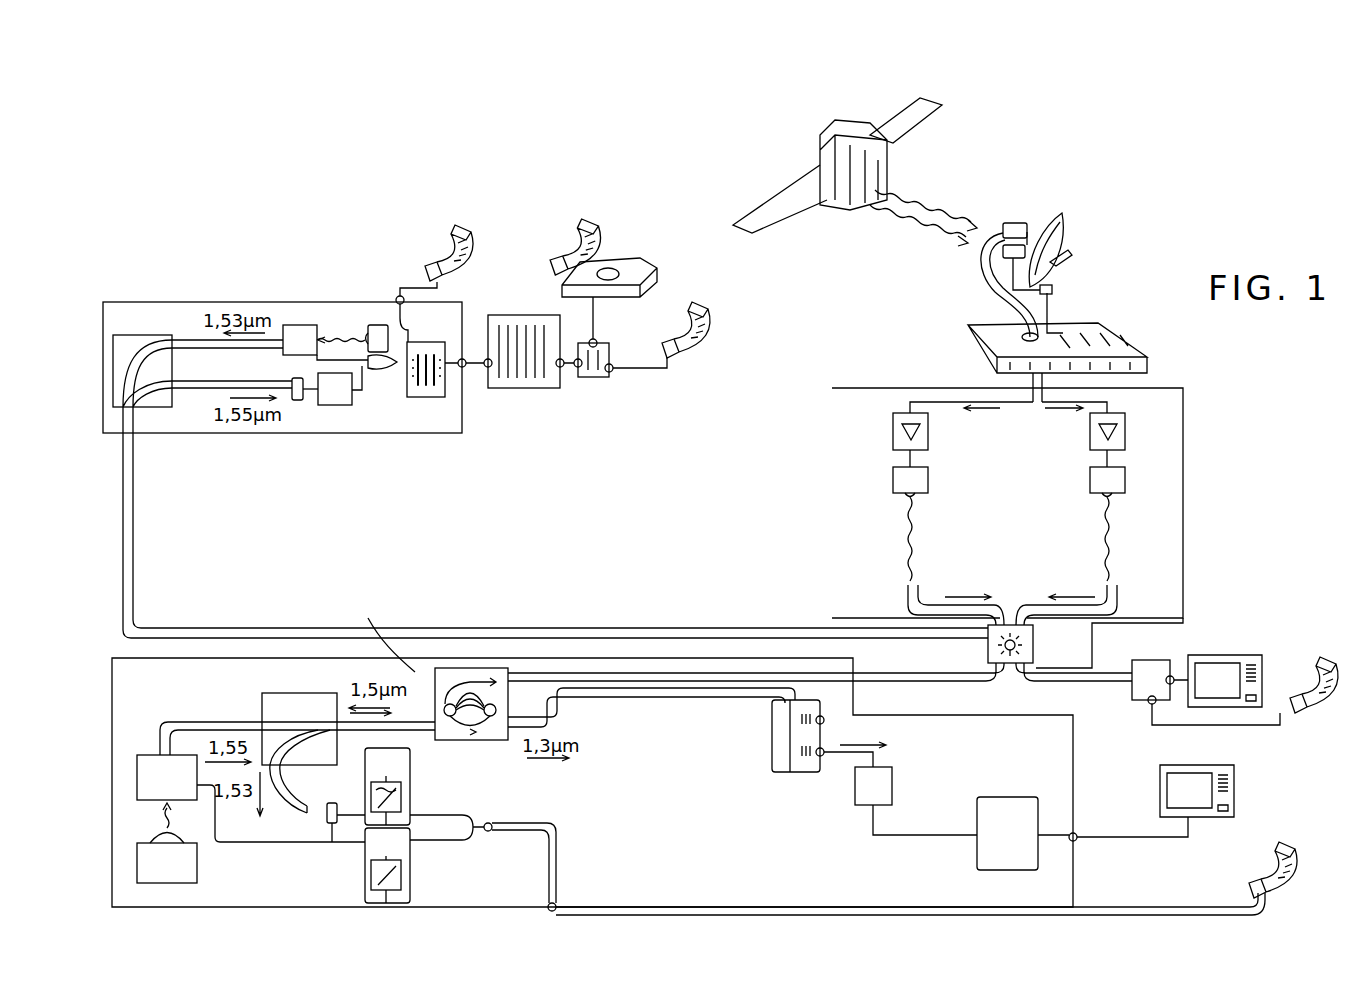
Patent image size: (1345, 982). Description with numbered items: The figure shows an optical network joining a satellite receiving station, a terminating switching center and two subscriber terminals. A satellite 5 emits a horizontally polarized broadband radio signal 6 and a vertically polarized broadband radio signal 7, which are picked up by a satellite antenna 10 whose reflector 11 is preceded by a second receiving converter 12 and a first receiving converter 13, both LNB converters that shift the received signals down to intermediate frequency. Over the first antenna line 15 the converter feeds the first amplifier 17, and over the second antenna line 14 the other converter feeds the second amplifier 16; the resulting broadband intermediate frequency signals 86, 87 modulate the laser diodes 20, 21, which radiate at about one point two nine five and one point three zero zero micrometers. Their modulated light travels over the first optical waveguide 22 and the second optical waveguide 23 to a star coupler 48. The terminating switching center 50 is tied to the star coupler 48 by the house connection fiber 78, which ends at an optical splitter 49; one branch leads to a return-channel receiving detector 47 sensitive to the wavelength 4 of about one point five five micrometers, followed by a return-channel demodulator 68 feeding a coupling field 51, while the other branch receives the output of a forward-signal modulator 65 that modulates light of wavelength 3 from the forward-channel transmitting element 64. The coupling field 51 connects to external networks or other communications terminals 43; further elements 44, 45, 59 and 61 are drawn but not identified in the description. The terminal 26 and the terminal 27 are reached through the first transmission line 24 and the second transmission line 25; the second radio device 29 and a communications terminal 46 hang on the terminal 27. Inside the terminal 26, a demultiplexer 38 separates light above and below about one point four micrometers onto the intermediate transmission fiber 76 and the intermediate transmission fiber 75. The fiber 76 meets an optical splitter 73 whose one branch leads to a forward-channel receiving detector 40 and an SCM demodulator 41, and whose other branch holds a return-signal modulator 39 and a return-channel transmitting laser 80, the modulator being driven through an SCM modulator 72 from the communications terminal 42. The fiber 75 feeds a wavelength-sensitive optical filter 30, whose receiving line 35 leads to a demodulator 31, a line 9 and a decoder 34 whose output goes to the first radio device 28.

The wavelength 3 is at (227, 331).
The wavelength 4 is at (232, 398).
The satellite 5 is at (890, 163).
The first horizontally polarized broadband radio signal 6 is at (930, 208).
The second vertically polarized broadband radio signal 7 is at (925, 232).
The line 9 is at (935, 832).
The satellite antenna 10 is at (1050, 312).
The reflector 11 is at (1065, 240).
The second receiving converter 12 is at (1012, 223).
The first receiving converter 13 is at (1025, 250).
The second antenna line 14 is at (945, 388).
The first antenna line 15 is at (1150, 390).
The second amplifier 16 is at (893, 440).
The first amplifier 17 is at (1125, 440).
The laser diode 20 is at (893, 487).
The laser diode 21 is at (1125, 487).
The first optical waveguide 22 is at (905, 600).
The second optical waveguide 23 is at (1120, 600).
The first transmission line 24 is at (962, 685).
The second transmission line 25 is at (1110, 690).
The terminal 26 is at (1075, 805).
The terminal 27 is at (1160, 665).
The first radio device 28 is at (1222, 812).
The second radio device 29 is at (1247, 655).
The wavelength-sensitive optical filter 30 is at (776, 755).
The demodulator 31 is at (855, 790).
The decoder 34 is at (1012, 797).
The receiving line 35 is at (880, 755).
The demultiplexer 38 is at (490, 740).
The return-signal modulator 39 is at (152, 770).
The forward-channel receiving detector 40 is at (332, 842).
The SCM demodulator 41 is at (410, 776).
The communications terminal 42 is at (1275, 840).
The communications terminals 43 is at (470, 255).
The telephone set 44 is at (620, 265).
The telephone 45 is at (688, 305).
The communications terminal 46 is at (1300, 656).
The return-channel receiving detector 47 is at (297, 400).
The star coupler 48 is at (1033, 643).
The optical splitter 49 is at (120, 335).
The terminating switching center 50 is at (170, 302).
The coupling field 51 is at (430, 397).
The switching unit 59 is at (533, 388).
The interface unit 61 is at (597, 377).
The forward-channel transmitting element 64 is at (378, 325).
The forward-signal modulator 65 is at (312, 325).
The return-channel demodulator 68 is at (345, 405).
The SCM modulator 72 is at (410, 862).
The optical coupler 73 is at (298, 700).
The intermediate transmission fiber 75 is at (660, 697).
The intermediate transmission fiber 76 is at (383, 631).
The house connection fiber 78 is at (432, 628).
The return-channel transmitting laser 80 is at (197, 872).
The broadband intermediate frequency signal 86 is at (985, 421).
The broadband intermediate frequency signal 87 is at (1064, 421).